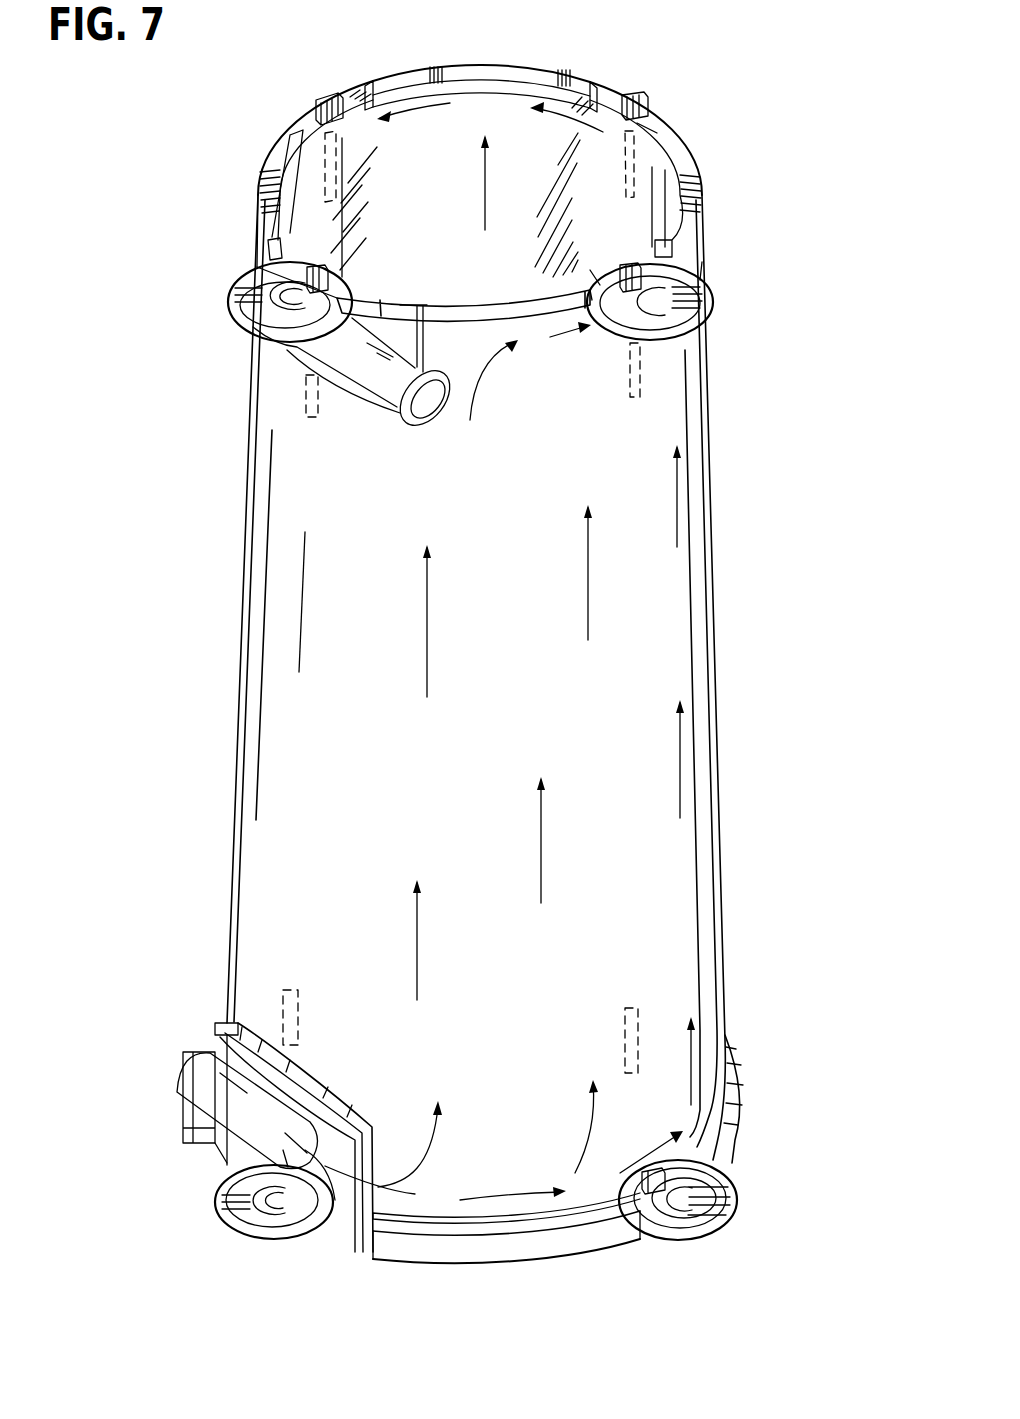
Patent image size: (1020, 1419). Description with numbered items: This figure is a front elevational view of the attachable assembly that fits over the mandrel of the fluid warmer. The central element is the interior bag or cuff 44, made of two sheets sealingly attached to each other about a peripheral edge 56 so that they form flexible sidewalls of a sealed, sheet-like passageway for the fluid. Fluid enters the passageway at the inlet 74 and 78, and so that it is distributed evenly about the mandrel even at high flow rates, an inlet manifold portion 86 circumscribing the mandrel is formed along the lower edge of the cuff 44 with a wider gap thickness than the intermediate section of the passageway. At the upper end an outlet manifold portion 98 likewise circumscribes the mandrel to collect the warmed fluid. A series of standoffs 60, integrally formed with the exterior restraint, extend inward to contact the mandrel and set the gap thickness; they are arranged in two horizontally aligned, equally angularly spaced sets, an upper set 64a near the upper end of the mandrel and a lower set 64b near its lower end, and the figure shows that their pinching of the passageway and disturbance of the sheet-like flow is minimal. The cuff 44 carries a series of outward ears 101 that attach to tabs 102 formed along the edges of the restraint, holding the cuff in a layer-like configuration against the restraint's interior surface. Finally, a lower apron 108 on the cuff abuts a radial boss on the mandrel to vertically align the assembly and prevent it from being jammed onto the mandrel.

The cuff 44 is at (466, 112).
The peripheral edge 56 is at (365, 92).
The outlet manifold portion 98 is at (581, 120).
The standoffs 60 is at (678, 108).
The upper set of standoffs 64a is at (640, 397).
The lower set of standoffs 64b is at (640, 1030).
The tabs 102 is at (625, 268).
The outward ears 101 is at (712, 295).
The inlet 78 is at (327, 348).
The inlet 74 is at (330, 1170).
The inlet manifold portion 86 is at (443, 1207).
The lower apron 108 is at (575, 1240).